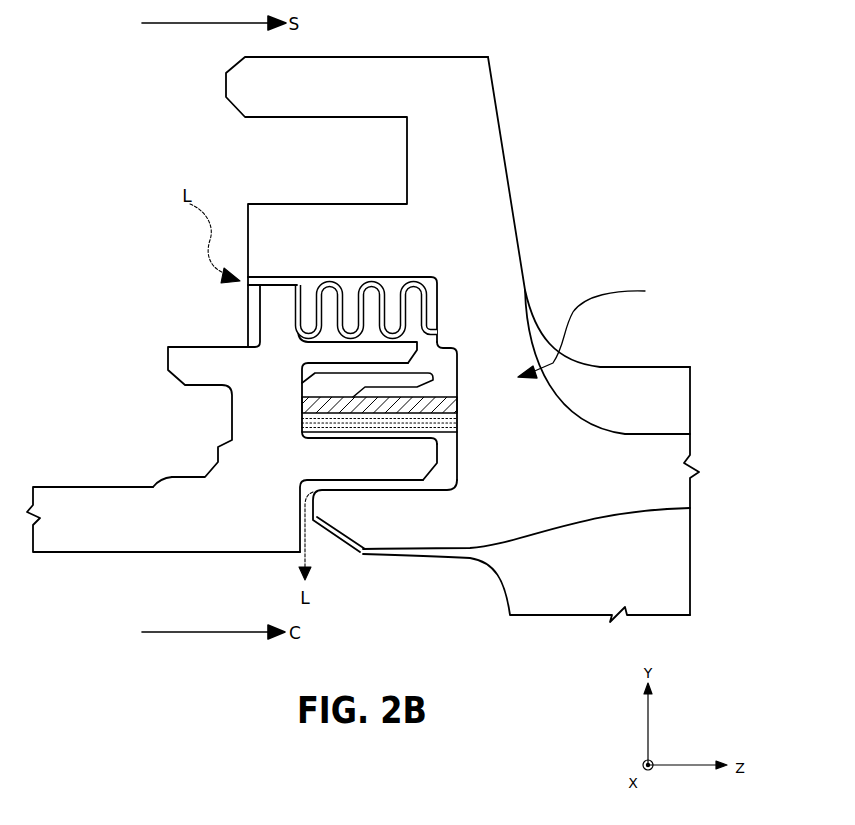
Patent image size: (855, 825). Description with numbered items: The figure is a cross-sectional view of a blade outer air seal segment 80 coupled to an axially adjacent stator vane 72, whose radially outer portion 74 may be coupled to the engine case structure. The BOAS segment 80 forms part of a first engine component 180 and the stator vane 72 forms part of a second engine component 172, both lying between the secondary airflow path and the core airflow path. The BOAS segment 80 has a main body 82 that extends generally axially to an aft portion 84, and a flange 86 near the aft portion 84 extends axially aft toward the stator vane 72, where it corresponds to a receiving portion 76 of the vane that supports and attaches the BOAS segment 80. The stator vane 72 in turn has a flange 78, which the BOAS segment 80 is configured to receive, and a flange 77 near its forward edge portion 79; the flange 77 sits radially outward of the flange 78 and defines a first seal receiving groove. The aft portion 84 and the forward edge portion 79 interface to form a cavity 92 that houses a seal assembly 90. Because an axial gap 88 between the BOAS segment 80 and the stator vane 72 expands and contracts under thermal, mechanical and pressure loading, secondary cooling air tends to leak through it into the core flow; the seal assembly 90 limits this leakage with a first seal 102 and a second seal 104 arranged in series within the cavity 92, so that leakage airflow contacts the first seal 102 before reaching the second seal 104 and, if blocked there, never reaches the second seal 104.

The stator vane 72 is at (672, 590).
The radially outer portion 74 is at (672, 445).
The receiving portion 76 is at (464, 424).
The flange 77 is at (308, 230).
The flange 78 is at (373, 527).
The forward edge portion 79 is at (594, 329).
The BOAS segment 80 is at (243, 442).
The main body 82 is at (70, 498).
The aft portion 84 is at (273, 403).
The flange 86 is at (417, 460).
The gap 88 is at (443, 470).
The seal assembly 90 is at (463, 277).
The cavity 92 is at (441, 357).
The first seal 102 is at (349, 285).
The second seal 104 is at (300, 420).
The second engine component 172 is at (660, 543).
The first engine component 180 is at (208, 497).